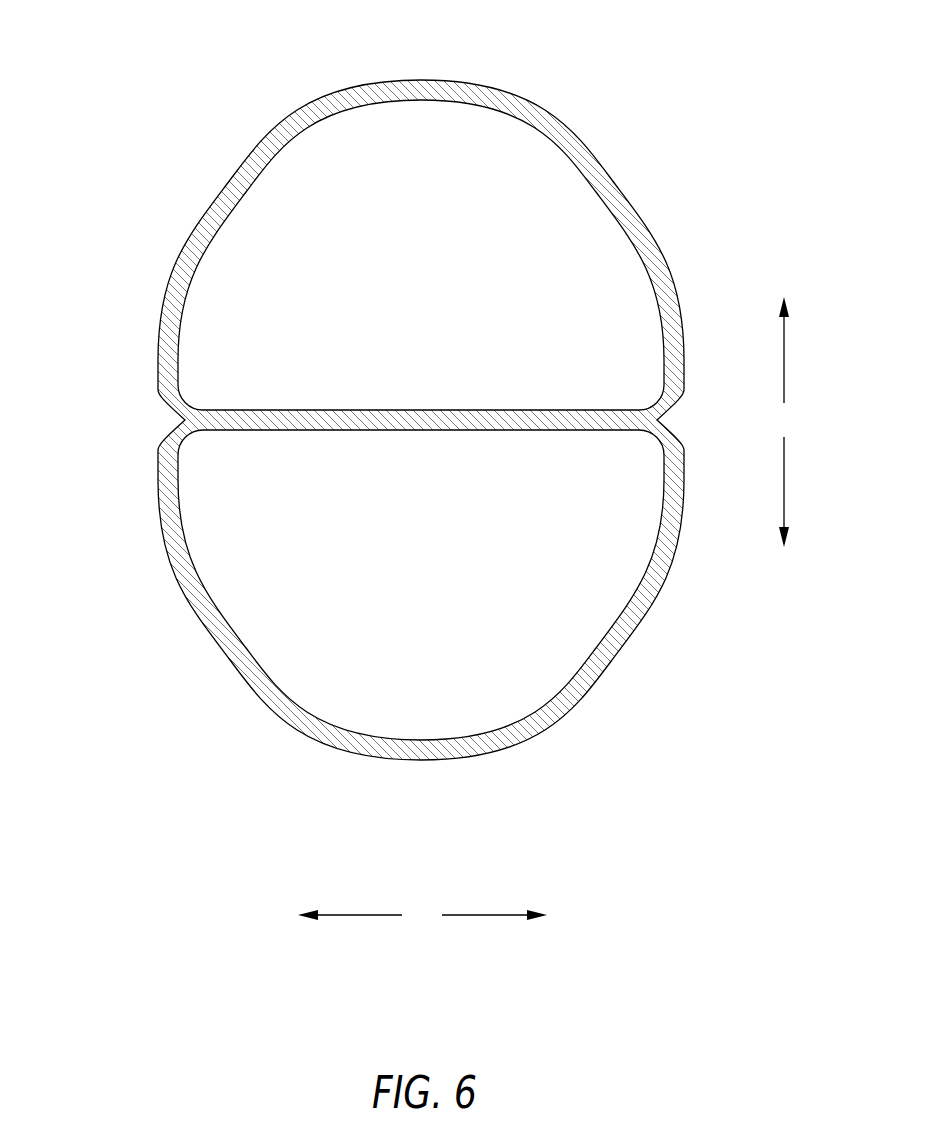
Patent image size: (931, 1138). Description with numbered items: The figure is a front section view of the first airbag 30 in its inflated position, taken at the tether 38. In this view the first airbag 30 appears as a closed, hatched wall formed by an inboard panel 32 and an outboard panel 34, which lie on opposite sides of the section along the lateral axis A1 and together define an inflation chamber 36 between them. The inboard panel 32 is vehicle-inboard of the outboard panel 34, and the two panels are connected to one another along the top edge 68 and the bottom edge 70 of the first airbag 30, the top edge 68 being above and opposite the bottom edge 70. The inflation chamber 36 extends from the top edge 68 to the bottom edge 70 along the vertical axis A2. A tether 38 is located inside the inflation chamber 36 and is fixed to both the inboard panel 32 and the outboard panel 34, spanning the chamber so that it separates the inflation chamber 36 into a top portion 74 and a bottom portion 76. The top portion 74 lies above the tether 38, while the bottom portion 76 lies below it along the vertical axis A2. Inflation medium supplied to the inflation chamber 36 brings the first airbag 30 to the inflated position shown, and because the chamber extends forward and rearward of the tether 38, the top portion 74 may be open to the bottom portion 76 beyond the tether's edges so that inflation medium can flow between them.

The first airbag 30 is at (465, 569).
The inboard panel 32 is at (172, 277).
The outboard panel 34 is at (670, 276).
The inflation chamber 36 is at (424, 420).
The tether 38 is at (350, 431).
The top edge 68 is at (428, 80).
The bottom edge 70 is at (427, 761).
The top portion 74 is at (436, 286).
The bottom portion 76 is at (436, 570).
The lateral axis A1 is at (422, 914).
The vertical axis A2 is at (783, 422).